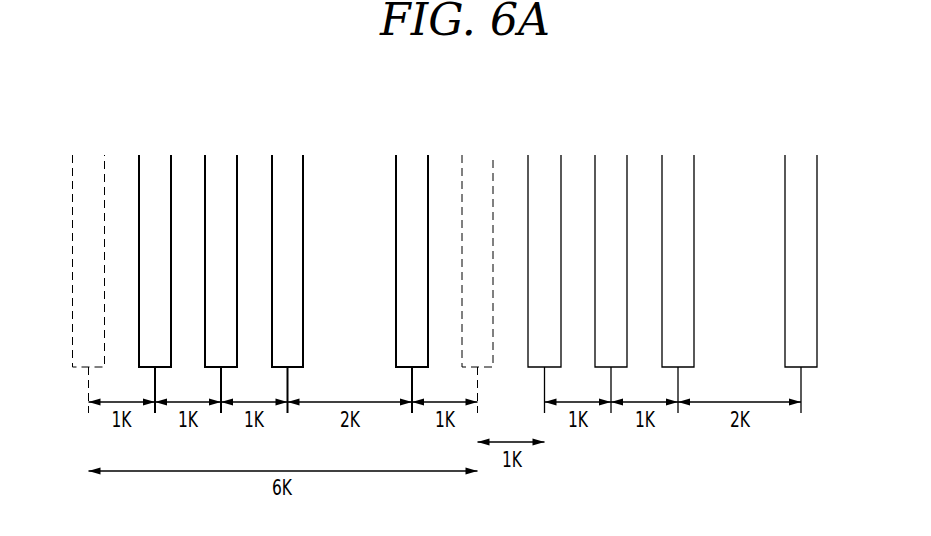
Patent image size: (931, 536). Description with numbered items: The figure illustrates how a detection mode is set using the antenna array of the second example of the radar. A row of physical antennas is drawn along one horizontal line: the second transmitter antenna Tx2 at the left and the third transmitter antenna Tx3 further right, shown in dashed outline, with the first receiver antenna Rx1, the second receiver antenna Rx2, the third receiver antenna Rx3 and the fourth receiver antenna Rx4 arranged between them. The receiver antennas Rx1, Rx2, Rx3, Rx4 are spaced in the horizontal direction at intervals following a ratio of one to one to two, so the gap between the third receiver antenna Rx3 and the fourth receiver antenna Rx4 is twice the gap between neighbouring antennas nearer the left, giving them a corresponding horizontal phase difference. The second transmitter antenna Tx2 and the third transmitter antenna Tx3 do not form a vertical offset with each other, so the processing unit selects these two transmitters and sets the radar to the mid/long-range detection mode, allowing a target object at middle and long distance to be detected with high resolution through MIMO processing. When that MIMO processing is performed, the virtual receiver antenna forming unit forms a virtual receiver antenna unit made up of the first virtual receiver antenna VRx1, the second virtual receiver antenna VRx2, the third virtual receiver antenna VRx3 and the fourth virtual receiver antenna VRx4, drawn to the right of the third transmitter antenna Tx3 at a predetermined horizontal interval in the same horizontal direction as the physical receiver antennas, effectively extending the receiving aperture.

The second transmitter antenna Tx2 is at (88, 264).
The first receiver antenna Rx1 is at (155, 264).
The second receiver antenna Rx2 is at (221, 264).
The third receiver antenna Rx3 is at (288, 264).
The fourth receiver antenna Rx4 is at (412, 264).
The third transmitter antenna Tx3 is at (477, 264).
The first virtual receiver antenna VRx1 is at (544, 264).
The second virtual receiver antenna VRx2 is at (611, 264).
The third virtual receiver antenna VRx3 is at (678, 264).
The fourth virtual receiver antenna VRx4 is at (801, 264).